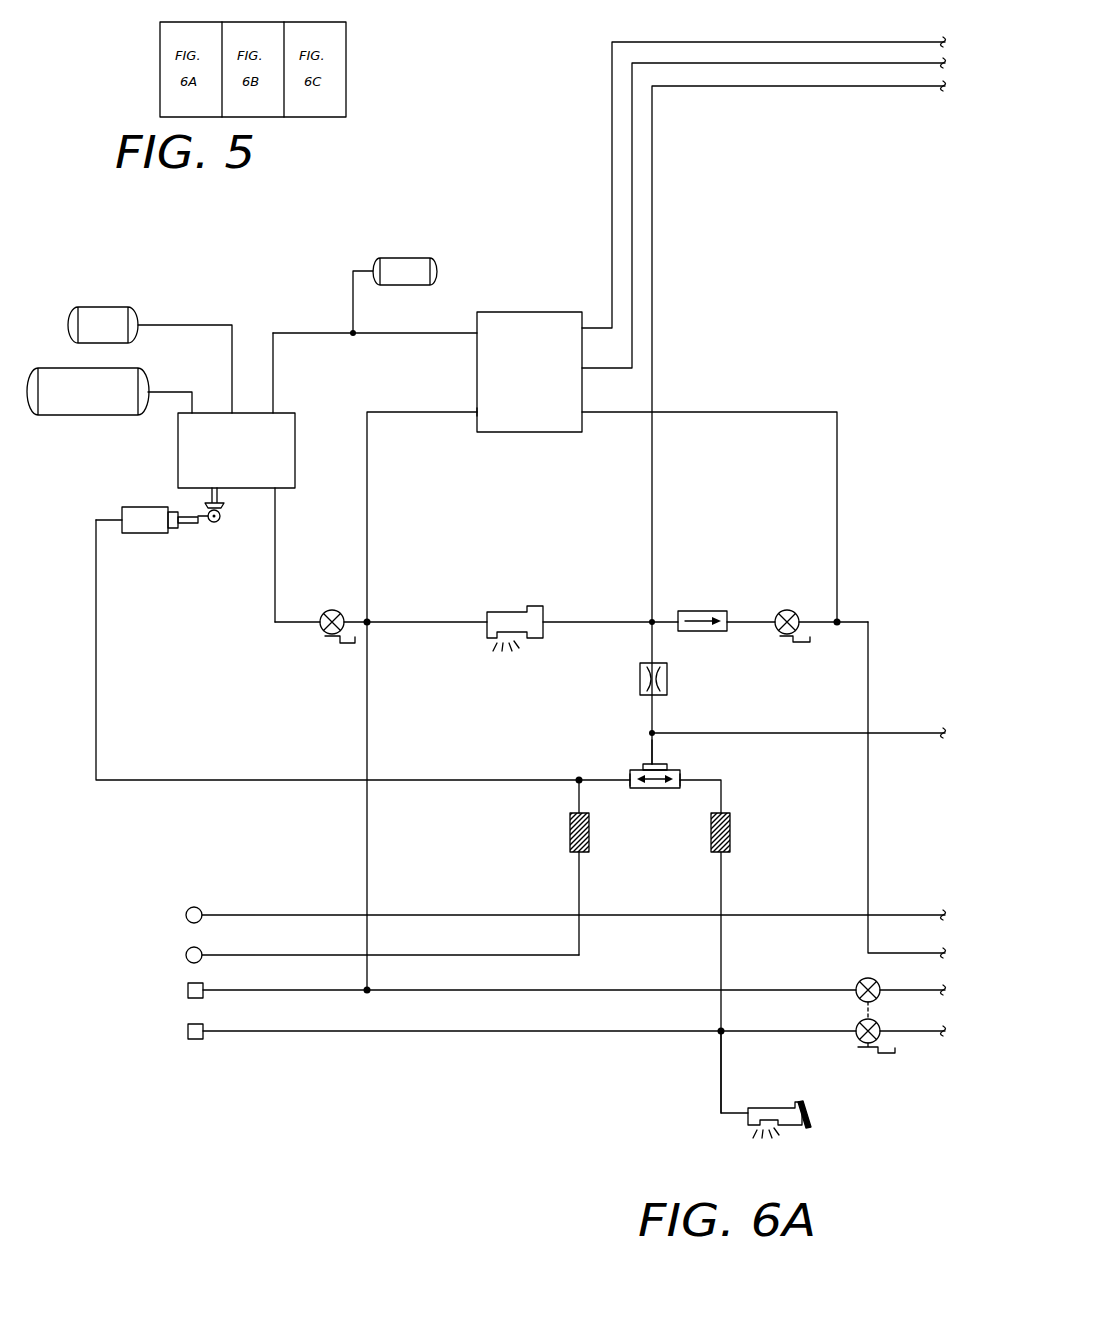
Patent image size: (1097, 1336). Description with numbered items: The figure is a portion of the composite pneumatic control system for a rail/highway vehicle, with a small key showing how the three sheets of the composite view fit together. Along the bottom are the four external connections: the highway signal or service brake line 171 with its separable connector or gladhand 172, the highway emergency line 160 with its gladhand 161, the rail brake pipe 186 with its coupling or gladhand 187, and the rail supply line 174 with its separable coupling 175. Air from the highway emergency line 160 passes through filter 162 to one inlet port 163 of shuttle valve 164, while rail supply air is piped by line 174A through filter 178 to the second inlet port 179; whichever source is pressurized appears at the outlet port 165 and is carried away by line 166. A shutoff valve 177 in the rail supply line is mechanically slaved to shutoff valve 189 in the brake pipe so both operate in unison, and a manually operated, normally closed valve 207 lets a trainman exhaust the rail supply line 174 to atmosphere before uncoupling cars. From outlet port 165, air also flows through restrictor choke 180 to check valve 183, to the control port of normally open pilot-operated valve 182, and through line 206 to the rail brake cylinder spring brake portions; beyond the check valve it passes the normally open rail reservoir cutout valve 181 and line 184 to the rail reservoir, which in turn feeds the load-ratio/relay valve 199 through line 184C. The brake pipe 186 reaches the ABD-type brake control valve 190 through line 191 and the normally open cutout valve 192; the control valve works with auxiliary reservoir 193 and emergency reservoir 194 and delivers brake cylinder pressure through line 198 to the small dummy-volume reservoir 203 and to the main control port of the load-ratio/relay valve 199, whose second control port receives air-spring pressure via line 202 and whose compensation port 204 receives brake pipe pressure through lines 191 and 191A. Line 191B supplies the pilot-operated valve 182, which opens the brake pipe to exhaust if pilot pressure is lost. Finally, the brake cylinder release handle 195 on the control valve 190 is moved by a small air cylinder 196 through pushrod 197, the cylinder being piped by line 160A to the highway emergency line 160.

The line 198 is at (855, 63).
The line 202 is at (612, 152).
The line 206 is at (652, 205).
The auxiliary reservoir 193 is at (102, 306).
The emergency reservoir 194 is at (47, 416).
The small reservoir 203 is at (410, 258).
The load-ratio/relay valve 199 is at (548, 312).
The brake control valve 190 is at (178, 464).
The brake cylinder release handle 195 is at (223, 506).
The small air cylinder 196 is at (152, 533).
The pushrod 197 is at (190, 525).
The line 191A is at (367, 510).
The line 191B is at (425, 620).
The line 191 is at (357, 627).
The cutout valve 192 is at (325, 638).
The pilot-operated valve 182 is at (515, 610).
The check valve 183 is at (707, 611).
The rail reservoir cutout valve 181 is at (785, 640).
The line 184C is at (852, 448).
The restrictor choke 180 is at (640, 683).
The line 160A is at (96, 657).
The outlet port 165 is at (652, 765).
The line 166 is at (740, 733).
The inlet port 163 is at (630, 772).
The second inlet port 179 is at (680, 775).
The shuttle valve 164 is at (645, 790).
The filter 162 is at (570, 835).
The filter 178 is at (732, 830).
The line 184 is at (868, 838).
The separable connector or gladhand 172 is at (195, 907).
The highway signal or service brake line 171 is at (296, 890).
The separable connector or gladhand 161 is at (207, 937).
The highway emergency line 160 is at (297, 935).
The separable coupling or gladhand 187 is at (208, 975).
The brake pipe 186 is at (296, 975).
The rail supply line 174 is at (306, 1015).
The separable coupling 175 is at (200, 1043).
The line 174A is at (721, 945).
The shutoff valve 189 is at (858, 980).
The shutoff valve 177 is at (858, 1037).
The manually-operated normally-closed valve 207 is at (808, 1128).
The compensation port 204 is at (477, 415).